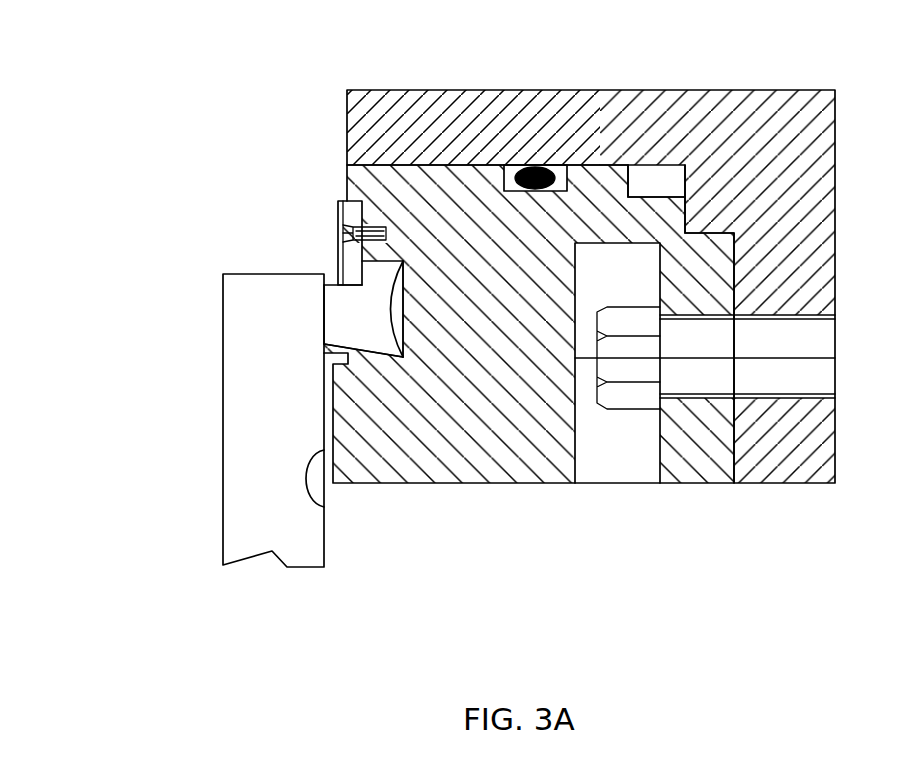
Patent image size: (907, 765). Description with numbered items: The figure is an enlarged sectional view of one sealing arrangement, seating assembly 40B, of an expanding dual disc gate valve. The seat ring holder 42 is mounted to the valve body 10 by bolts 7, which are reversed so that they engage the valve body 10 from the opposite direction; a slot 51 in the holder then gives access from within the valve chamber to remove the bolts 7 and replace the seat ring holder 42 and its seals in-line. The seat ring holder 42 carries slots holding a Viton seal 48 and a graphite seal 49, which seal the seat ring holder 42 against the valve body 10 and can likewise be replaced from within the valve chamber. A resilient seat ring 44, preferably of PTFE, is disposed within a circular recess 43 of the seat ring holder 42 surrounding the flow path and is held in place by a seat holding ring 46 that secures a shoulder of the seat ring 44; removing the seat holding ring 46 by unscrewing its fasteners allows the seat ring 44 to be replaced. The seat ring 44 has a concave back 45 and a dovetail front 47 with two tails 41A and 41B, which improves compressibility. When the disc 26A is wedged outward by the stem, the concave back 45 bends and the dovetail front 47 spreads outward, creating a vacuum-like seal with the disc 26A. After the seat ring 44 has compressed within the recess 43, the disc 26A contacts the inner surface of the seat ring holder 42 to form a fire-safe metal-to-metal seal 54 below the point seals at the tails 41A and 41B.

The seating assembly 40B is at (90, 105).
The valve body 10 is at (805, 106).
The seat ring holder 42 is at (438, 466).
The graphite seal 49 is at (657, 183).
The Viton seal 48 is at (533, 166).
The slot 51 is at (603, 462).
The bolt 7 is at (695, 378).
The seat holding ring 46 is at (337, 200).
The dovetail front 47 is at (338, 284).
The tail 41A is at (327, 313).
The tail 41B is at (324, 332).
The concave back 45 is at (405, 285).
The circular recess 43 is at (405, 313).
The seat ring 44 is at (363, 350).
The disc 26A is at (240, 427).
The metal-to-metal seal 54 is at (324, 507).